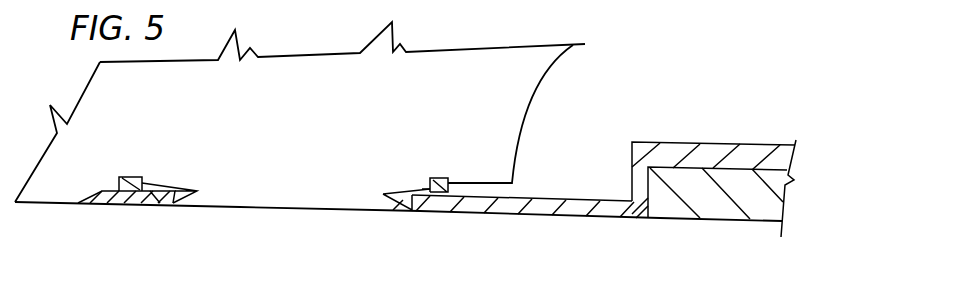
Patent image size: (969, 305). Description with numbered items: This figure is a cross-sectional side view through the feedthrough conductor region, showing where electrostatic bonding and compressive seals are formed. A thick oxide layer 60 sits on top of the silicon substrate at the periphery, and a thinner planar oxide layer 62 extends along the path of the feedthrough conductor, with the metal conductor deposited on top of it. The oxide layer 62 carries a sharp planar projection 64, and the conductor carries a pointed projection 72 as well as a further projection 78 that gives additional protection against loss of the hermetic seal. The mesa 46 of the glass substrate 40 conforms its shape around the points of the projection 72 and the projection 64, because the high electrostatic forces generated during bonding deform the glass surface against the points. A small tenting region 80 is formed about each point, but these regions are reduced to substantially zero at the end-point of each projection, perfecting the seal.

The glass substrate 40 is at (282, 133).
The mesa 46 is at (500, 163).
The thick oxide layer 60 is at (707, 210).
The planar oxide layer 62 is at (503, 207).
The planar projection 64 is at (128, 204).
The projection 72 is at (131, 181).
The further projection 78 is at (440, 178).
The tenting region 80 is at (286, 194).